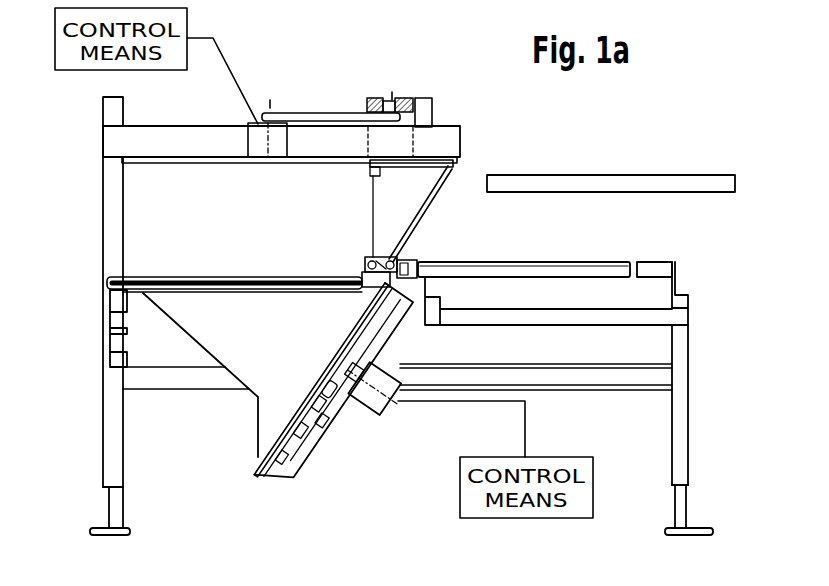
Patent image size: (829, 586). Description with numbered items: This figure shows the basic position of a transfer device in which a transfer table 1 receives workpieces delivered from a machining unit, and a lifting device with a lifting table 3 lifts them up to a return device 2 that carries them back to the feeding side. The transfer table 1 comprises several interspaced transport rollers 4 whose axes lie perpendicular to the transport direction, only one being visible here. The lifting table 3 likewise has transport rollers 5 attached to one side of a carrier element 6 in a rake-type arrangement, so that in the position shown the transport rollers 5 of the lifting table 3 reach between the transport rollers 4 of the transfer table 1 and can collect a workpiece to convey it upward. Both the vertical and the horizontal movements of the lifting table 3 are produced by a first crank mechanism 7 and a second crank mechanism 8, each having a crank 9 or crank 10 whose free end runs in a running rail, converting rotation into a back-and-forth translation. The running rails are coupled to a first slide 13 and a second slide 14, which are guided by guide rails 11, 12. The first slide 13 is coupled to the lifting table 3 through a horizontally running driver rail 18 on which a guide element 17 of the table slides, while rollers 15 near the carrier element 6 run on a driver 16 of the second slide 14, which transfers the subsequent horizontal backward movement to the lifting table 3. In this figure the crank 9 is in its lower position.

The transfer table 1 is at (688, 259).
The return device 2 is at (719, 172).
The lifting table 3 is at (548, 264).
The transport rollers 4 is at (645, 262).
The transport rollers 5 is at (488, 262).
The carrier element 6 is at (408, 262).
The first crank mechanism 7 is at (348, 418).
The second crank mechanism 8 is at (378, 96).
The crank 9 is at (322, 420).
The crank 10 is at (319, 112).
The guide rail 11 is at (260, 478).
The guide rail 12 is at (197, 166).
The first slide 13 is at (258, 463).
The second slide 14 is at (373, 173).
The rollers 15 is at (367, 257).
The driver 16 is at (438, 188).
The guide element 17 is at (362, 273).
The driver rail 18 is at (303, 293).